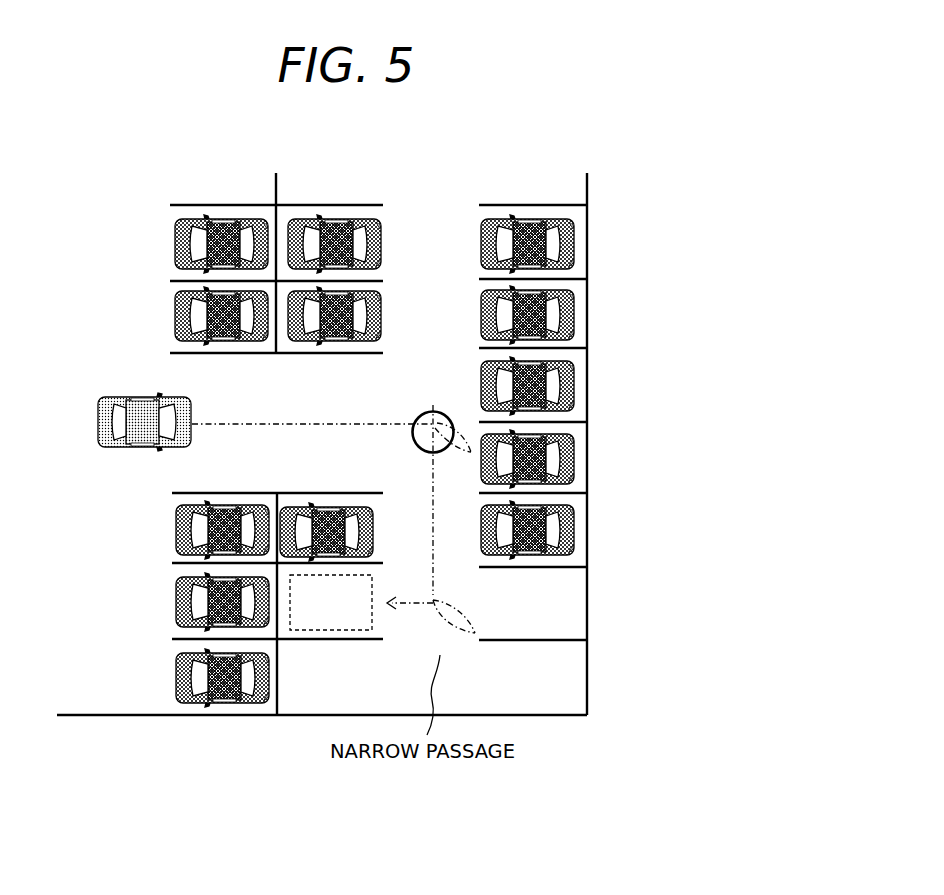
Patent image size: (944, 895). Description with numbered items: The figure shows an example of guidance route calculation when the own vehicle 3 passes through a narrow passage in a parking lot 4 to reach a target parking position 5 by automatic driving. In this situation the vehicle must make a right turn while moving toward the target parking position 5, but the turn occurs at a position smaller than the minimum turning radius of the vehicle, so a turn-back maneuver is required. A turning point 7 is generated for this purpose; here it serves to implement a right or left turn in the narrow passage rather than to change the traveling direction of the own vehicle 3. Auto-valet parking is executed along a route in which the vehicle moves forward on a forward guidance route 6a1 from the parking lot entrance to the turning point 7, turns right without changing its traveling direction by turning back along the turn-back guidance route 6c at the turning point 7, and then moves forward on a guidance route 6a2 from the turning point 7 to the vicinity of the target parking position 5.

The own vehicle 3 is at (126, 400).
The parking lot 4 is at (588, 434).
The target parking position 5 is at (334, 613).
The forward guidance route 6a1 is at (291, 424).
The guidance route 6a2 is at (431, 494).
The turn-back guidance route 6c is at (466, 440).
The turning point 7 is at (419, 417).